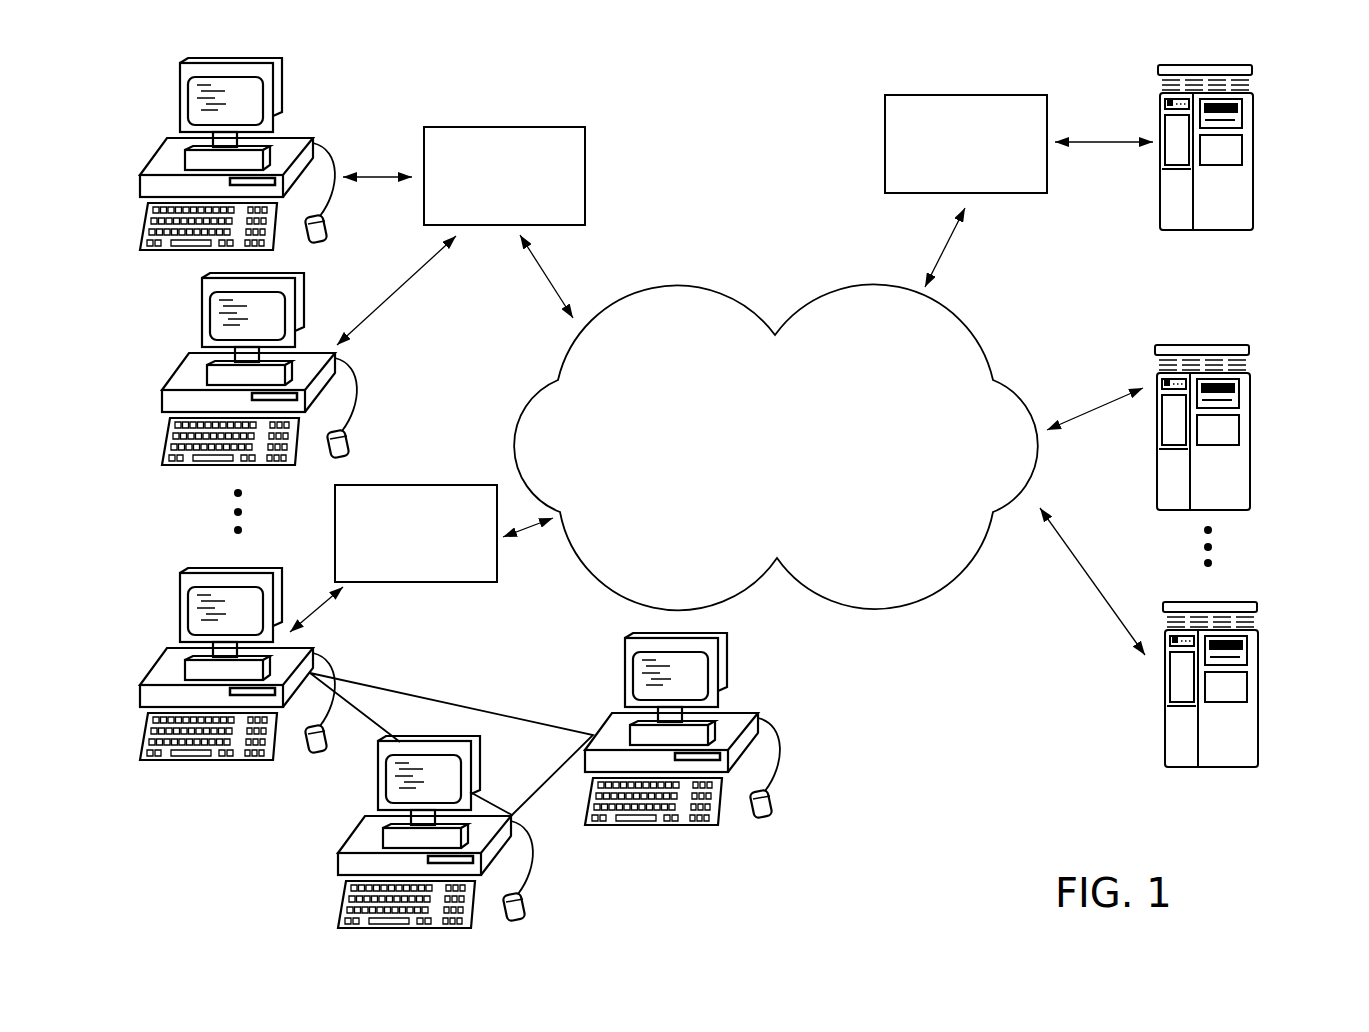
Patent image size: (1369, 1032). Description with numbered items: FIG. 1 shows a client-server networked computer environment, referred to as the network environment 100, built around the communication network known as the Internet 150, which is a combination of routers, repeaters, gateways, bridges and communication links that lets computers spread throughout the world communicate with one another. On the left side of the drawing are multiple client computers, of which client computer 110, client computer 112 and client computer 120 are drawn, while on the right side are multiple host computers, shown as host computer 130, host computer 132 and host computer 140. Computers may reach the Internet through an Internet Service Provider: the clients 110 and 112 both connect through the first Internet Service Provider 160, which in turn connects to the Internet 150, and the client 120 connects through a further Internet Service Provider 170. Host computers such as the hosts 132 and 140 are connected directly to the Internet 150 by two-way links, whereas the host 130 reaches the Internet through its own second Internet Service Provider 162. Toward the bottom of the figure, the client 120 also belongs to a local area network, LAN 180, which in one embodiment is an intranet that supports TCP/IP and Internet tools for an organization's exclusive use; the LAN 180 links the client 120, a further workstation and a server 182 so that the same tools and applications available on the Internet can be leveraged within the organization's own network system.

The network environment 100 is at (688, 153).
The client computer 110 is at (308, 127).
The client computer 112 is at (380, 373).
The client computer 120 is at (222, 569).
The host computer 130 is at (1257, 153).
The host computer 132 is at (1246, 427).
The host computer 140 is at (1252, 673).
The Internet 150 is at (776, 447).
The Internet Service Provider (1) 160 is at (490, 126).
The Internet Service Provider (2) 162 is at (884, 131).
The Internet Service Provider (X) 170 is at (413, 485).
The local area network 180 is at (500, 680).
The server 182 is at (745, 713).